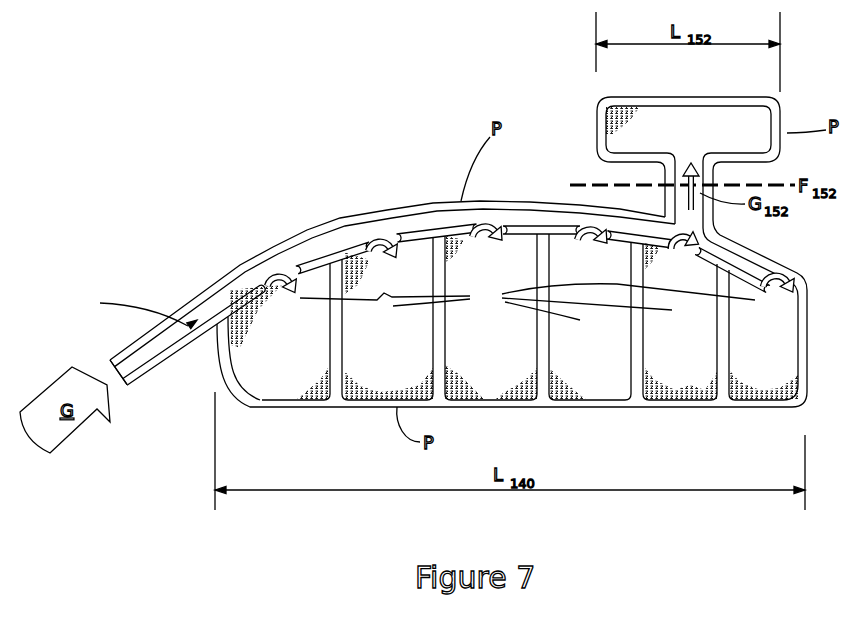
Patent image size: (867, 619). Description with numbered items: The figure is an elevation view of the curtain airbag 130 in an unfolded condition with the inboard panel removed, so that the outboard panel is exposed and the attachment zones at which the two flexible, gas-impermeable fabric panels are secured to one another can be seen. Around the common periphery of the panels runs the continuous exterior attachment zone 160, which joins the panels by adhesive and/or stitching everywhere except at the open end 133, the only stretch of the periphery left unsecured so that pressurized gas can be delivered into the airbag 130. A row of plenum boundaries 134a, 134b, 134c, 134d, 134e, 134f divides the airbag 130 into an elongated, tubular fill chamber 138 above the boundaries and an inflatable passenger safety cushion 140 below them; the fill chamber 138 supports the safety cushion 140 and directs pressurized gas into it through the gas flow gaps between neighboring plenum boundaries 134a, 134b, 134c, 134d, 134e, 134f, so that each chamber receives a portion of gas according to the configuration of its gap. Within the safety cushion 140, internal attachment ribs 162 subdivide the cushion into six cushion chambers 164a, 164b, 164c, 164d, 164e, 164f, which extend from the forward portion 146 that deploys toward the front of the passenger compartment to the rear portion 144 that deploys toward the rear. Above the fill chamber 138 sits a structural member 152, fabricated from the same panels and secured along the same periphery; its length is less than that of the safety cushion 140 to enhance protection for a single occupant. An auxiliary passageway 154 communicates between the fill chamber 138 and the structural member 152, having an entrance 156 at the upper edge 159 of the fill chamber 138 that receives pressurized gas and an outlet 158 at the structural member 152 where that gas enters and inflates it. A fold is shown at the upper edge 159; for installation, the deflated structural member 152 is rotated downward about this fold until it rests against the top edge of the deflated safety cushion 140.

The curtain airbag 130 is at (268, 238).
The open end 133 is at (107, 372).
The plenum boundary 134a is at (257, 297).
The plenum boundary 134b is at (312, 264).
The plenum boundary 134c is at (402, 236).
The plenum boundary 134d is at (510, 230).
The plenum boundary 134e is at (612, 234).
The plenum boundary 134f is at (790, 272).
The fill chamber 138 is at (513, 137).
The passenger safety cushion 140 is at (612, 332).
The rear portion 144 is at (762, 335).
The forward portion 146 is at (275, 380).
The structural member 152 is at (714, 120).
The auxiliary passageway 154 is at (720, 177).
The entrance 156 is at (694, 218).
The outlet 158 is at (717, 148).
The upper edge 159 is at (650, 212).
The exterior attachment zone 160 is at (434, 203).
The internal attachment ribs 162 is at (527, 302).
The cushion chamber 164a is at (280, 331).
The cushion chamber 164b is at (387, 319).
The cushion chamber 164c is at (491, 317).
The cushion chamber 164d is at (590, 317).
The cushion chamber 164e is at (680, 321).
The cushion chamber 164f is at (763, 335).